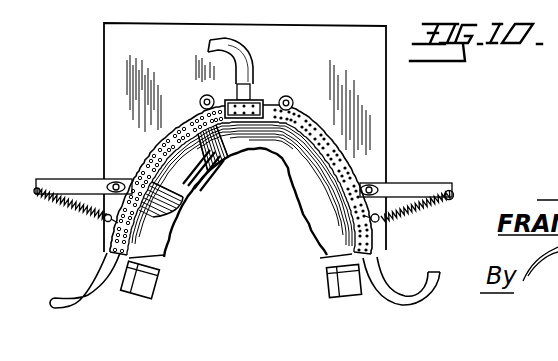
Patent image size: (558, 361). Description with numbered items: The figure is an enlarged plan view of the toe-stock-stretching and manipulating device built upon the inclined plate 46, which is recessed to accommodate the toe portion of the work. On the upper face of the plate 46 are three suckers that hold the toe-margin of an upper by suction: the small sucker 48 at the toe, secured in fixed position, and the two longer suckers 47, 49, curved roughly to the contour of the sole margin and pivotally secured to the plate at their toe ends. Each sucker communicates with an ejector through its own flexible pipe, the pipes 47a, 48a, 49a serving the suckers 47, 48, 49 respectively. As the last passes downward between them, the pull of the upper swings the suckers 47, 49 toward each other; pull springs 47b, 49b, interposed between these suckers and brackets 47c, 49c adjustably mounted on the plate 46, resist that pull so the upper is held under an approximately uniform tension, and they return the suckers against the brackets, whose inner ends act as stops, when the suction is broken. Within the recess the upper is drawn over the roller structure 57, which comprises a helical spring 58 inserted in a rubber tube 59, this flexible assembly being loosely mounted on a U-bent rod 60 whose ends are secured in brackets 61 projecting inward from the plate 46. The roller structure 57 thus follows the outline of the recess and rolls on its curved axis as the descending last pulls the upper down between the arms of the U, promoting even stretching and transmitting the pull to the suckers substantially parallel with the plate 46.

The inclined plate 46 is at (383, 108).
The sucker 47 is at (183, 122).
The flexible pipe 47a is at (77, 295).
The pull spring 47b is at (77, 217).
The bracket 47c is at (70, 170).
The small sucker 48 is at (254, 100).
The flexible pipe 48a is at (237, 43).
The sucker 49 is at (307, 127).
The flexible pipe 49a is at (393, 287).
The pull spring 49b is at (407, 216).
The bracket 49c is at (418, 186).
The roller structure 57 is at (164, 252).
The helical spring 58 is at (190, 202).
The rubber tube 59 is at (258, 147).
The U-bent rod 60 is at (195, 165).
The bracket 61 is at (151, 285).